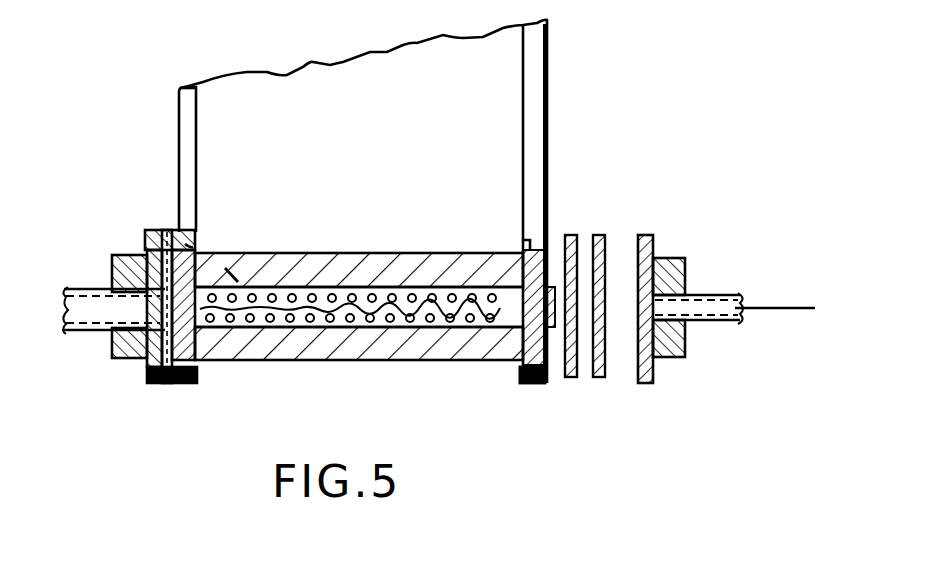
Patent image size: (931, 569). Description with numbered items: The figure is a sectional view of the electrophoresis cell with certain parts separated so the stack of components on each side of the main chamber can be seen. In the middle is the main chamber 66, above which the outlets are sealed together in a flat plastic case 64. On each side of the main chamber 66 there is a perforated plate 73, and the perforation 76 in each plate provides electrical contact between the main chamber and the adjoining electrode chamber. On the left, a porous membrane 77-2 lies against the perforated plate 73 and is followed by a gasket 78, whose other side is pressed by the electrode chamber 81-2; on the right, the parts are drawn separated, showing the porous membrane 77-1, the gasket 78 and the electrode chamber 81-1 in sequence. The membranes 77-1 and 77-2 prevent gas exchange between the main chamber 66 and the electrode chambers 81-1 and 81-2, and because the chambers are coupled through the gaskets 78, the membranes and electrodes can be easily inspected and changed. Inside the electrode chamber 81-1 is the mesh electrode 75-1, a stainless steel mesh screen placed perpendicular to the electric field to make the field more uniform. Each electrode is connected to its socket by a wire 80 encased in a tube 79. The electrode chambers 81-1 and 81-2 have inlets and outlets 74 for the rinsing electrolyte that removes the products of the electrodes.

The flat plastic case 64 is at (362, 128).
The main chamber 66 is at (502, 254).
The perforated plate 73 is at (192, 242).
The inlet and outlet tube 74 is at (92, 288).
The perforation 76 is at (232, 282).
The porous membrane 77-1 is at (573, 245).
The porous membrane 77-2 is at (178, 232).
The gasket 78 is at (172, 232).
The tube 79 is at (716, 300).
The wire 80 is at (785, 306).
The electrode chamber 81-1 is at (657, 253).
The electrode chamber 81-2 is at (148, 360).
The mesh electrode 75-1 is at (637, 335).